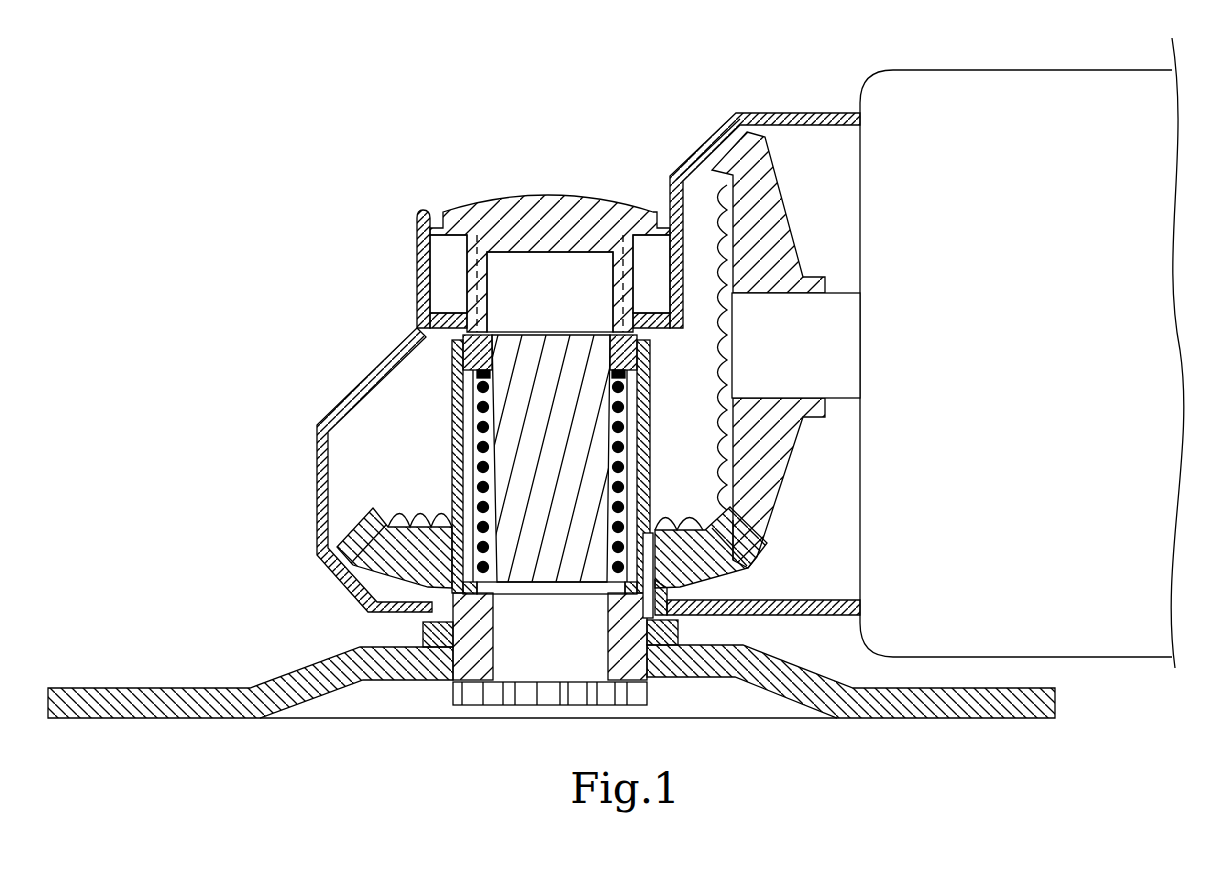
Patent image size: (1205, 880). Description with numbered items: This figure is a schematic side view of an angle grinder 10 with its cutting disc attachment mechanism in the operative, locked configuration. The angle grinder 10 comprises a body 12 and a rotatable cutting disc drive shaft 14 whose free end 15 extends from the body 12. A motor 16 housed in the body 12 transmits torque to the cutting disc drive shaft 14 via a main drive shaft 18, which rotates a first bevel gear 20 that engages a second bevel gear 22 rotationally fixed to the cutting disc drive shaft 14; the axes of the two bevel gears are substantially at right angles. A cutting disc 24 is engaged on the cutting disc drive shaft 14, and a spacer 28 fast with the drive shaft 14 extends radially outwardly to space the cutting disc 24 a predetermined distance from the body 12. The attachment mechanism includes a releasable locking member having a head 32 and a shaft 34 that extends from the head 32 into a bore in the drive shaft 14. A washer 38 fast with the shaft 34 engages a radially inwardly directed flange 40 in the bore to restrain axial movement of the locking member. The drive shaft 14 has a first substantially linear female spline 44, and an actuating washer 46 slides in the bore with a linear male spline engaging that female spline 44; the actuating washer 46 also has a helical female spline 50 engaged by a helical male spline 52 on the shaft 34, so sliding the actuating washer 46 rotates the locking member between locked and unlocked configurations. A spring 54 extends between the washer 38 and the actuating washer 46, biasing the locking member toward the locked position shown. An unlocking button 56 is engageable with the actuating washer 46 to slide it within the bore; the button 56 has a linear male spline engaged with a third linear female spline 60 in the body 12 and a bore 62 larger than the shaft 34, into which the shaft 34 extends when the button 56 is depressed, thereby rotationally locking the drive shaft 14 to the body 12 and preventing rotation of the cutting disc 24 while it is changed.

The angle grinder 10 is at (214, 164).
The body 12 is at (800, 113).
The cutting disc drive shaft 14 is at (450, 448).
The free end 15 is at (677, 637).
The motor 16 is at (1003, 183).
The main drive shaft 18 is at (779, 356).
The first bevel gear 20 is at (790, 203).
The second bevel gear 22 is at (353, 520).
The cutting disc 24 is at (128, 688).
The spacer 28 is at (420, 635).
The head 32 is at (650, 692).
The shaft 34 is at (530, 665).
The washer 38 is at (607, 587).
The flange 40 is at (490, 613).
The first substantially linear female spline 44 is at (472, 487).
The actuating washer 46 is at (432, 333).
The second generally helical female spline 50 is at (605, 348).
The second generally helical male spline 52 is at (543, 458).
The spring 54 is at (628, 428).
The unlocking button 56 is at (540, 194).
The third substantially linear female spline 60 is at (463, 300).
The bore 62 is at (537, 281).